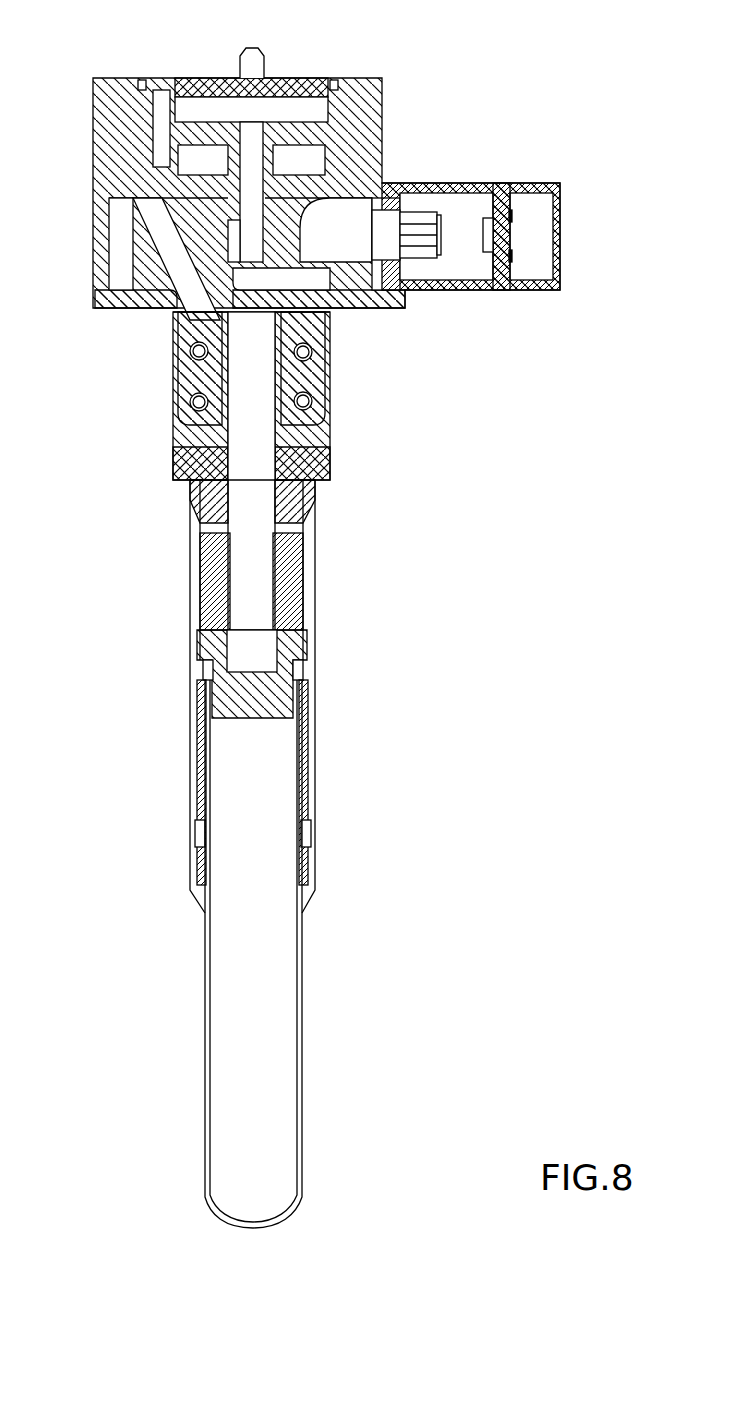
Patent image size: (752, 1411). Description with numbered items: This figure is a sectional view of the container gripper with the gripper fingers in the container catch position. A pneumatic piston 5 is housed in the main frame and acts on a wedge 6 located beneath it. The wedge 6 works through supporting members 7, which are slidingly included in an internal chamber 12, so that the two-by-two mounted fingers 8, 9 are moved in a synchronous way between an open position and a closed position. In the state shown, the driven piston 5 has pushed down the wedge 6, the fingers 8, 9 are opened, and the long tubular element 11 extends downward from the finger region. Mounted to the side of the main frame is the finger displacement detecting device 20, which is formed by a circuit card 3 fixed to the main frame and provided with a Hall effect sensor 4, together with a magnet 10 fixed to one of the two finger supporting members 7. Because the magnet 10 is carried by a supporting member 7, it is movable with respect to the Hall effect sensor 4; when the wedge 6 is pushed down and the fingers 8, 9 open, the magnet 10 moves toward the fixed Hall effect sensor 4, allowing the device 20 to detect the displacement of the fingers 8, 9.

The circuit card 3 is at (503, 262).
The Hall effect sensor 4 is at (490, 255).
The pneumatic piston 5 is at (293, 130).
The wedge 6 is at (120, 165).
The supporting members 7 is at (357, 215).
The finger 8 is at (190, 728).
The finger 9 is at (313, 693).
The magnet 10 is at (438, 242).
The test tube 11 is at (300, 975).
The internal chamber 12 is at (118, 252).
The finger displacement detecting device 20 is at (522, 232).